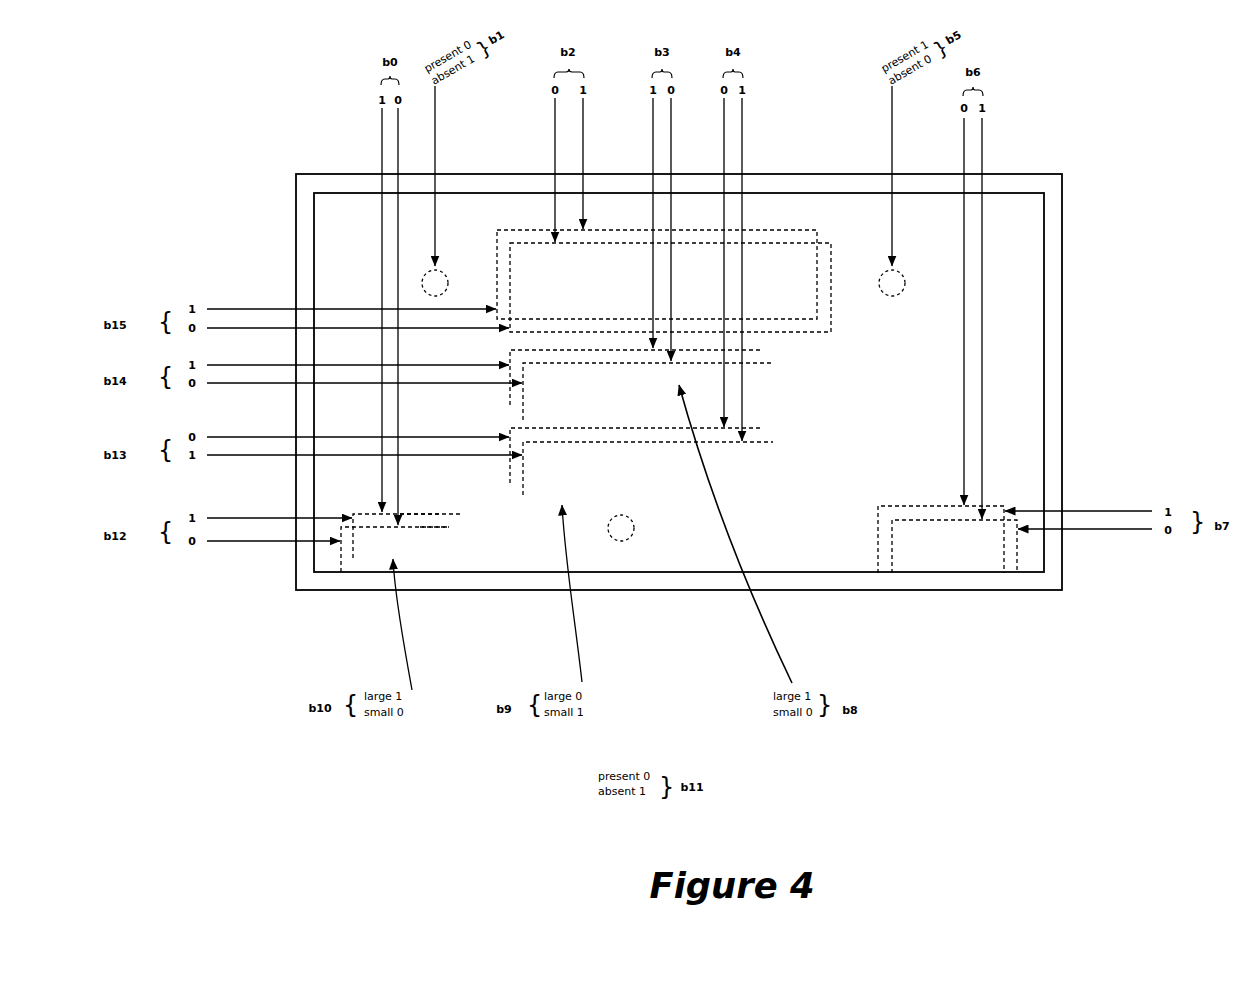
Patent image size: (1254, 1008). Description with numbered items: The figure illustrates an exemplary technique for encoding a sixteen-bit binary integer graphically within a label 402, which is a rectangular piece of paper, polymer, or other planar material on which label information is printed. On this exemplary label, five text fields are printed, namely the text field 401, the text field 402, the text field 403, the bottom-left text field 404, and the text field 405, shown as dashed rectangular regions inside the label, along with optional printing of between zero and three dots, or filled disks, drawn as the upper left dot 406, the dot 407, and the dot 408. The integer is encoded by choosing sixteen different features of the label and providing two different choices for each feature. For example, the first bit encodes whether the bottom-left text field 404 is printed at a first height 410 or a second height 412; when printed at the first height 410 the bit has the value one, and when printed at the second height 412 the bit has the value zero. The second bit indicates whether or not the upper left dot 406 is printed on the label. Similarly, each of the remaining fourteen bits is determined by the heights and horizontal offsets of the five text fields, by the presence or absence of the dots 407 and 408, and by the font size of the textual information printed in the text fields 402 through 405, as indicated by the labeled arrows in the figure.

The text field 401 is at (843, 320).
The label 402 is at (1062, 293).
The text field 403 is at (768, 460).
The bottom-left text field 404 is at (438, 559).
The text field 405 is at (963, 558).
The upper left dot 406 is at (446, 274).
The dot 407 is at (881, 274).
The dot 408 is at (634, 530).
The first height 410 is at (420, 515).
The second height 412 is at (437, 530).